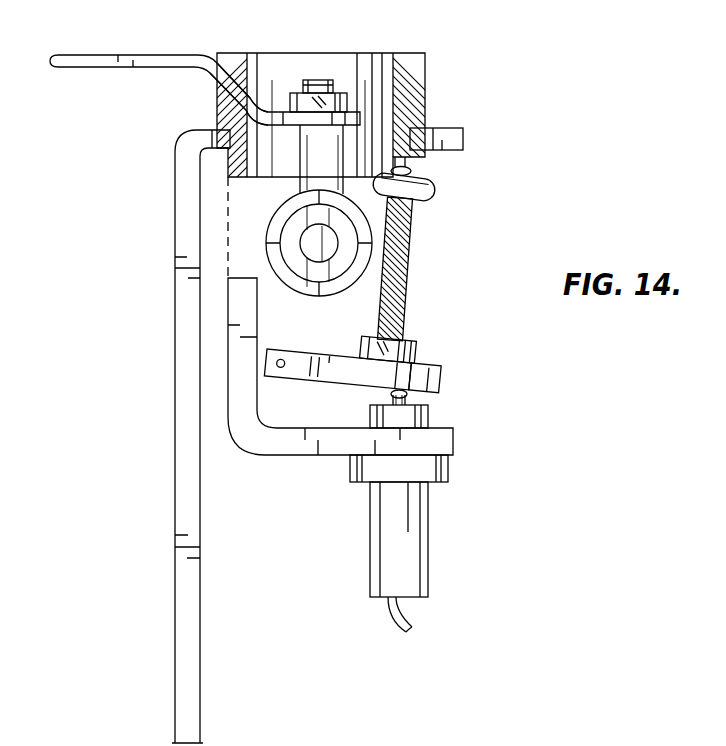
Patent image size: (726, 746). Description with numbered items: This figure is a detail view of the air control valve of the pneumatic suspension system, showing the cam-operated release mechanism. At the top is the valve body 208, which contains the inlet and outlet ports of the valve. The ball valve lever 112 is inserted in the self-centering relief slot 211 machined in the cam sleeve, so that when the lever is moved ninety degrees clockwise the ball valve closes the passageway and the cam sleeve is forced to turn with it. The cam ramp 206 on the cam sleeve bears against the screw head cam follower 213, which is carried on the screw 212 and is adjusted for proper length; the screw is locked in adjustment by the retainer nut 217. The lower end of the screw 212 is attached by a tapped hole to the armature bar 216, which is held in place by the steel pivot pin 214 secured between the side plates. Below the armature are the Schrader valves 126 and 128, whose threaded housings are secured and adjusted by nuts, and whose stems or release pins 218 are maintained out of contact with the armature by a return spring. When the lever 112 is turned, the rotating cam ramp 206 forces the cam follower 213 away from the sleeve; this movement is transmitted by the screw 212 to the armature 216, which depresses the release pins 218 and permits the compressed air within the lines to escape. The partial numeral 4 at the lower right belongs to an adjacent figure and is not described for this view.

The ball valve lever 112 is at (118, 55).
The self-centering relief slot 211 is at (217, 87).
The valve body 208 is at (453, 128).
The cam ramp 206 is at (412, 168).
The screw head cam follower 213 is at (437, 186).
The screw 212 is at (410, 250).
The retainer nut 217 is at (420, 332).
The armature bar 216 is at (445, 378).
The pivot pin 214 is at (278, 348).
The release pins 218 is at (392, 392).
The Schrader valve 126 is at (465, 518).
The Schrader valve 128 is at (428, 520).
The adjacent figure reference 4 is at (663, 745).